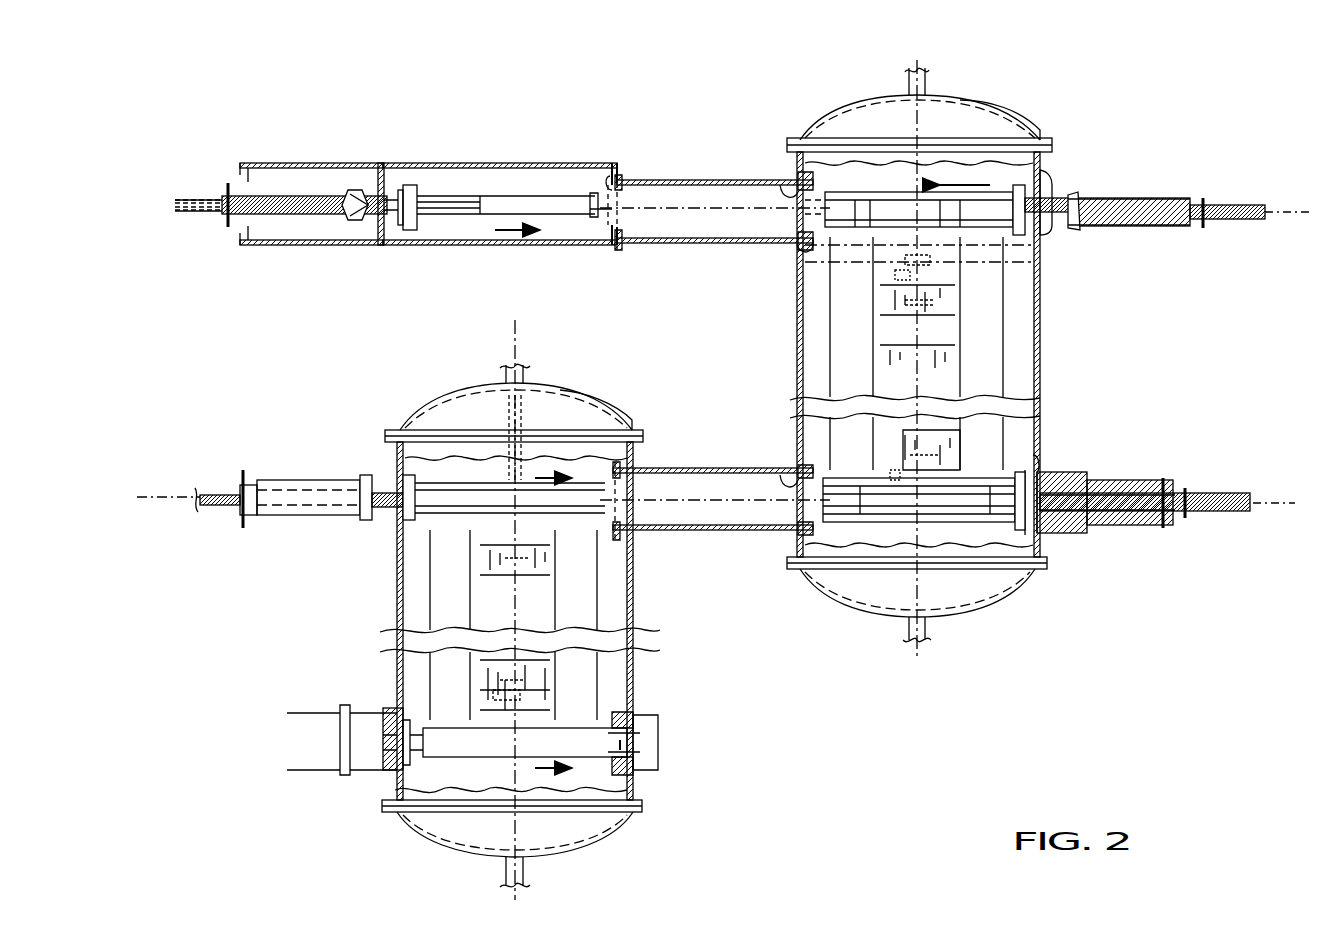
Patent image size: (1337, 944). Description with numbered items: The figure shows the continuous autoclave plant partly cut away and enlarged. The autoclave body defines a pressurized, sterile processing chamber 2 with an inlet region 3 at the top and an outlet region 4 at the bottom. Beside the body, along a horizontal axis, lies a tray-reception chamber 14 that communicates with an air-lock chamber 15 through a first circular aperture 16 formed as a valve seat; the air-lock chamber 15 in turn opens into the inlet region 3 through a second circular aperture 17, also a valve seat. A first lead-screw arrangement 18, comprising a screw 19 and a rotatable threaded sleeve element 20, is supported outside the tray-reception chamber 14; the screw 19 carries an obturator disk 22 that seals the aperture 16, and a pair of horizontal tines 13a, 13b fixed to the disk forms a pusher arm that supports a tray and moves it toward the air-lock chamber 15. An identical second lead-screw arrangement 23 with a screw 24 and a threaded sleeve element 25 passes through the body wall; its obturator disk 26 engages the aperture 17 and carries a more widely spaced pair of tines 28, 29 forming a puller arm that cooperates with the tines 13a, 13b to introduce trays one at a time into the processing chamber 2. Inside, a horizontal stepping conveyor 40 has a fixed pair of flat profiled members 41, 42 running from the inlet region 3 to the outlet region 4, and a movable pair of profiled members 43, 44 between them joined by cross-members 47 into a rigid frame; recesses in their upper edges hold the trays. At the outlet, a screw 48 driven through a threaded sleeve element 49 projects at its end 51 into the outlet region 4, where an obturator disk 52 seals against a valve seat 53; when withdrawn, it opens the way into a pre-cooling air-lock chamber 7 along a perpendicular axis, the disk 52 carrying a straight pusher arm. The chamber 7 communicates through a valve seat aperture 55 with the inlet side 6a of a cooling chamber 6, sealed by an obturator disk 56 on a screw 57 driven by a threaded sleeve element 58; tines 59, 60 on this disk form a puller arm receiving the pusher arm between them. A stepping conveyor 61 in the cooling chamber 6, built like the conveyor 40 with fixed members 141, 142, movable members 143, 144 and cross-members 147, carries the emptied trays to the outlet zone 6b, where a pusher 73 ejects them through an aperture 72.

The processing chamber 2 is at (1040, 272).
The inlet region 3 is at (825, 175).
The outlet region 4 is at (870, 535).
The cooling chamber 6 is at (400, 548).
The inlet side of cooling chamber 6a is at (595, 470).
The outlet zone of cooling chamber 6b is at (440, 780).
The pre-cooling air-lock chamber 7 is at (725, 531).
The tine 13a is at (450, 196).
The tine 13b is at (485, 214).
The tray-reception chamber 14 is at (445, 246).
The air-lock chamber 15 is at (690, 180).
The first circular aperture 16 is at (620, 178).
The second circular aperture 17 is at (800, 180).
The first lead-screw arrangement 18 is at (262, 175).
The screw 19 is at (275, 228).
The rotatable threaded sleeve element 20 is at (300, 195).
The obturator disk 22 is at (405, 185).
The second lead-screw arrangement 23 is at (1170, 188).
The screw 24 is at (1218, 205).
The rotatable threaded sleeve element 25 is at (1118, 198).
The obturator disk 26 is at (1035, 195).
The tine 28 is at (872, 200).
The tine 29 is at (965, 200).
The horizontal conveyor 40 is at (1015, 345).
The fixed profiled member 41 is at (830, 290).
The fixed profiled member 42 is at (1010, 392).
The movable profiled member 43 is at (873, 345).
The movable profiled member 44 is at (960, 450).
The cross-member 47 is at (950, 298).
The screw 48 is at (1128, 522).
The rotatable threaded sleeve element 49 is at (1172, 510).
The end of screw 51 is at (1033, 470).
The obturator disk 52 is at (1000, 500).
The valve seat 53 is at (800, 470).
The valve seat aperture 55 is at (625, 532).
The obturator disk 56 is at (415, 480).
The screw 57 is at (285, 518).
The threaded sleeve element 58 is at (310, 480).
The tine 59 is at (440, 490).
The tine 60 is at (475, 500).
The stepping conveyor 61 is at (420, 622).
The aperture 72 is at (640, 775).
The pusher 73 is at (300, 762).
The fixed profiled member of cooling-chamber conveyor 141 is at (430, 575).
The fixed profiled member of cooling-chamber conveyor 142 is at (580, 600).
The movable profiled member of cooling-chamber conveyor 143 is at (480, 600).
The movable profiled member of cooling-chamber conveyor 144 is at (600, 624).
The cross-member of cooling-chamber conveyor 147 is at (545, 685).